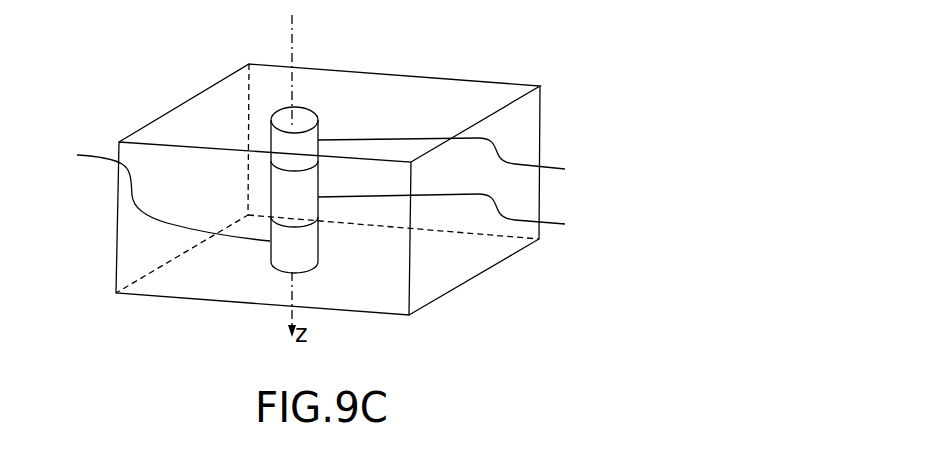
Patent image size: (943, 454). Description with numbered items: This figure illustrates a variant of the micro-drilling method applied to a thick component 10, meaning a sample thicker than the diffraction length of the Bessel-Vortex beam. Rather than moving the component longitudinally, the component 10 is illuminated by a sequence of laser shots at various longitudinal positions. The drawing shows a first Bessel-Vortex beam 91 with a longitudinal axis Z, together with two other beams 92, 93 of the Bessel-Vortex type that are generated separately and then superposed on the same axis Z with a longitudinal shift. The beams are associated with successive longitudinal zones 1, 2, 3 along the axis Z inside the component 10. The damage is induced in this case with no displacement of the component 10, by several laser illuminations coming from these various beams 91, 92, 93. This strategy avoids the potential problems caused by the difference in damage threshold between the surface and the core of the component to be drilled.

The sample block 10 is at (463, 104).
The first Bessel-Vortex beam 91 is at (156, 194).
The second Bessel-Vortex beam 92 is at (461, 217).
The third Bessel-Vortex beam 93 is at (461, 160).
The first core segment 1 is at (294, 245).
The second core segment 2 is at (294, 194).
The third core segment 3 is at (294, 139).